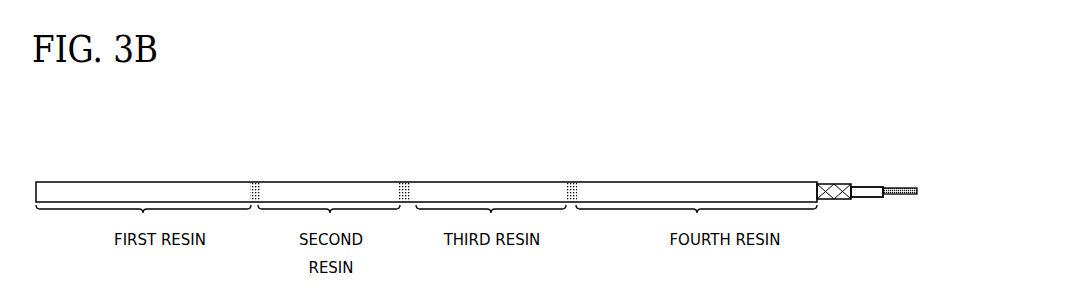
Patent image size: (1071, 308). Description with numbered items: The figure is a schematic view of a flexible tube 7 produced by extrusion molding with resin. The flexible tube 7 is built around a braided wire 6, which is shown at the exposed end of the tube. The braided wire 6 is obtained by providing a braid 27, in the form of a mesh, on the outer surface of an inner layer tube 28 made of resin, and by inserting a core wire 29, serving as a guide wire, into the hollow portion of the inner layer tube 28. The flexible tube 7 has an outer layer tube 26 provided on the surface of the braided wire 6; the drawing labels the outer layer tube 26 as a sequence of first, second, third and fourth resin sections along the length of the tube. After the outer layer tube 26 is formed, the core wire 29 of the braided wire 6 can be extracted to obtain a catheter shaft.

The flexible tube 7 is at (426, 155).
The outer layer tube 26 is at (426, 158).
The braided wire 6 is at (867, 143).
The braid 27 is at (834, 162).
The inner layer tube 28 is at (867, 161).
The core wire 29 is at (900, 160).